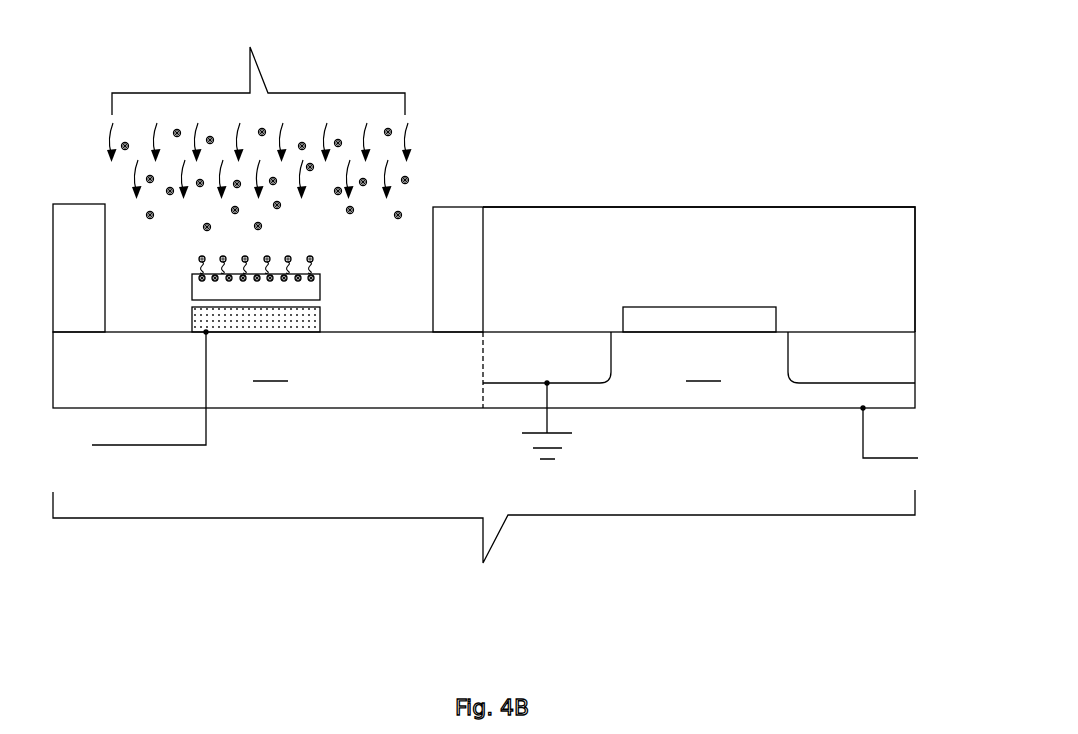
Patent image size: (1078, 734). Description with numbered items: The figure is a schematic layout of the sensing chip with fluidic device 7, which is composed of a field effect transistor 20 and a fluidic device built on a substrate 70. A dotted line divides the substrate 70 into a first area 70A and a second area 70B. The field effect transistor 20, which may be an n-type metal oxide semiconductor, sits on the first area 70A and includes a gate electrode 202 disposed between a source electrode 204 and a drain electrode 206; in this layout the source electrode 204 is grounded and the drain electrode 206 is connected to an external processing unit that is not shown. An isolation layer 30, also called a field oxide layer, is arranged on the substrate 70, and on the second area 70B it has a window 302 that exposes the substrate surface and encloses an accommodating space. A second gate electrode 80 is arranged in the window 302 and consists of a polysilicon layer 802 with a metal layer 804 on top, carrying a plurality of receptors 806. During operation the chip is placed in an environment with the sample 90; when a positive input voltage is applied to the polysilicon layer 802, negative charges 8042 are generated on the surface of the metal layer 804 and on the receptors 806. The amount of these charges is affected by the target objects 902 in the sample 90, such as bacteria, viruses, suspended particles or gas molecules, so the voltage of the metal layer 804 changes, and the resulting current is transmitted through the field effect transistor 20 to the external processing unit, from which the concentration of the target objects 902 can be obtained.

The sensing chip with fluidic device 7 is at (786, 75).
The field effect transistor 20 is at (757, 267).
The isolation layer 30 is at (78, 230).
The substrate 70 is at (484, 462).
The first area 70A is at (703, 372).
The second area 70B is at (270, 372).
The second gate electrode 80 is at (271, 285).
The sample 90 is at (259, 111).
The gate electrode 202 is at (687, 320).
The source electrode 204 is at (547, 358).
The drain electrode 206 is at (825, 375).
The window 302 is at (160, 323).
The polysilicon layer 802 is at (300, 318).
The metal layer 804 is at (300, 292).
The receptors 806 is at (318, 262).
The negative charges 8042 is at (196, 276).
The target objects 902 is at (409, 178).